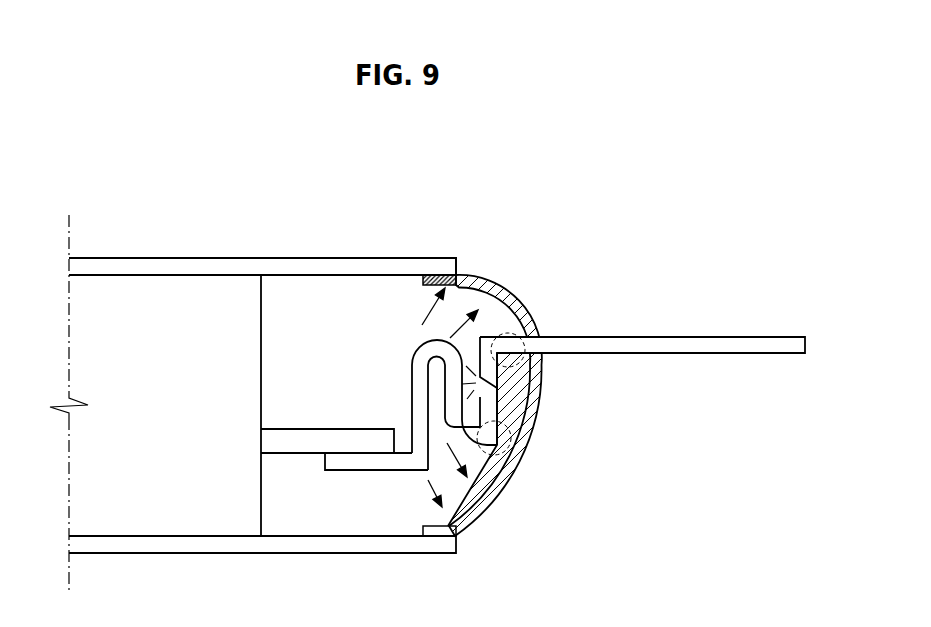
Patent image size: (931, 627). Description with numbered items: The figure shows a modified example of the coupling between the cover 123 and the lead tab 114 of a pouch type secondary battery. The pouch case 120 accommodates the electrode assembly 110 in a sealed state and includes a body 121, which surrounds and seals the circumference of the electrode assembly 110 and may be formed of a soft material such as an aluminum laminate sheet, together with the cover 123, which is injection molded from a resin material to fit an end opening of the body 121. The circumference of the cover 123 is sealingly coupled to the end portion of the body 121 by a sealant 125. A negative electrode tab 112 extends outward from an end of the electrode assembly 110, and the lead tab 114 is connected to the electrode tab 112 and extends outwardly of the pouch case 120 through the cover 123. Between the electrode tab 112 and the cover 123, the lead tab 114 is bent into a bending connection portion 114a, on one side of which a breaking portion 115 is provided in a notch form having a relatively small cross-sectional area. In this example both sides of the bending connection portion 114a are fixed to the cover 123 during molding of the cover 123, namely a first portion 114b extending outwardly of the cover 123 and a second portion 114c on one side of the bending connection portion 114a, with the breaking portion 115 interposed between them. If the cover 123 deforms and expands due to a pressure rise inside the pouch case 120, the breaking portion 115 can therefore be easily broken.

The electrode assembly 110 is at (88, 508).
The negative electrode tab 112 is at (330, 437).
The lead tab 114 is at (669, 342).
The bending connection portion 114a is at (428, 350).
The first portion 114b is at (527, 315).
The second portion 114c is at (510, 440).
The breaking portion 115 is at (497, 383).
The pouch case 120 is at (258, 248).
The body 121 is at (165, 268).
The cover 123 is at (497, 297).
The sealant 125 is at (460, 273).